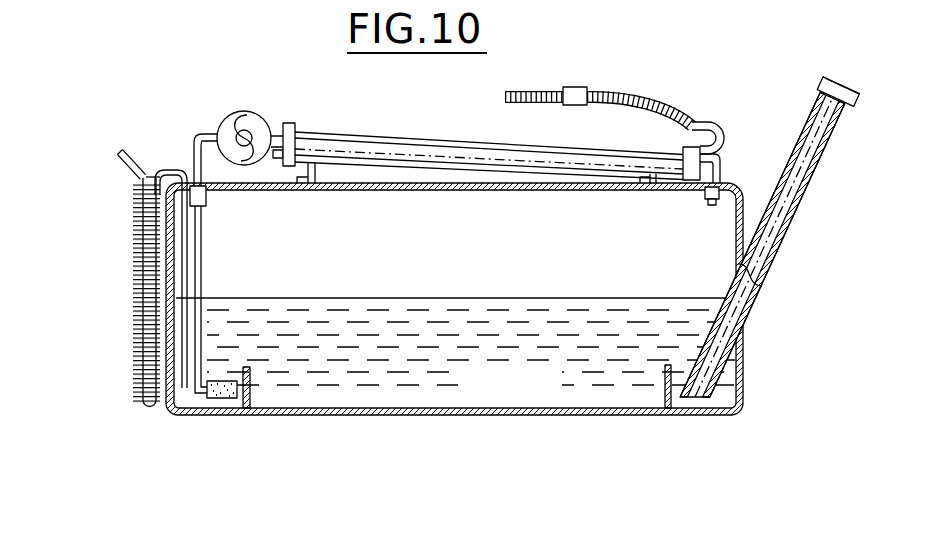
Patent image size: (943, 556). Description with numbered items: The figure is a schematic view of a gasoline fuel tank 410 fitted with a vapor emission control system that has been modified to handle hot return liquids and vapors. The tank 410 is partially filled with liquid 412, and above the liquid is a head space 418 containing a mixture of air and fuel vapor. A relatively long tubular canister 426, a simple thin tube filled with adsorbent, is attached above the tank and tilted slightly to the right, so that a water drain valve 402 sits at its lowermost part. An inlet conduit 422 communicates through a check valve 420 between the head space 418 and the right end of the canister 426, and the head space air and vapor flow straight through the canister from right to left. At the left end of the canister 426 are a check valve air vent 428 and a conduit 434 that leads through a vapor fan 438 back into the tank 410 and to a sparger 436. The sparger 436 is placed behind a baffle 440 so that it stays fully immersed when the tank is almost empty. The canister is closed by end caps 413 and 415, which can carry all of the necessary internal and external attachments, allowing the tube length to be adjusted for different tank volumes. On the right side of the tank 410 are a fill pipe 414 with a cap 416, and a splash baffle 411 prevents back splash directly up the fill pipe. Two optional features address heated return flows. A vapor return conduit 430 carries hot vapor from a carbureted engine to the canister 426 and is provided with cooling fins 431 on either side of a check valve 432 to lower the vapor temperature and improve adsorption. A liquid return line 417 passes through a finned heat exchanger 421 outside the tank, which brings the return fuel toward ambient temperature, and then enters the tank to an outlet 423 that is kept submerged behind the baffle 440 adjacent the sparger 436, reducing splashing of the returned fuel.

The water drain valve 402 is at (699, 196).
The gasoline fuel tank 410 is at (660, 414).
The splash baffle 411 is at (666, 373).
The liquid 412 is at (456, 345).
The end cap 413 is at (683, 150).
The fill pipe 414 is at (777, 262).
The end cap 415 is at (291, 124).
The cap 416 is at (846, 92).
The liquid return line 417 is at (157, 143).
The head space 418 is at (488, 268).
The check valve 420 is at (720, 208).
The finned heat exchanger 421 is at (153, 415).
The inlet conduit 422 is at (720, 161).
The outlet 423 is at (182, 412).
The tubular canister 426 is at (427, 145).
The check valve air vent 428 is at (277, 159).
The vapor return conduit 430 is at (714, 126).
The cooling fins 431 is at (660, 108).
The check valve 432 is at (578, 88).
The conduit 434 is at (195, 143).
The sparger 436 is at (222, 400).
The vapor fan 438 is at (247, 111).
The baffle 440 is at (252, 377).